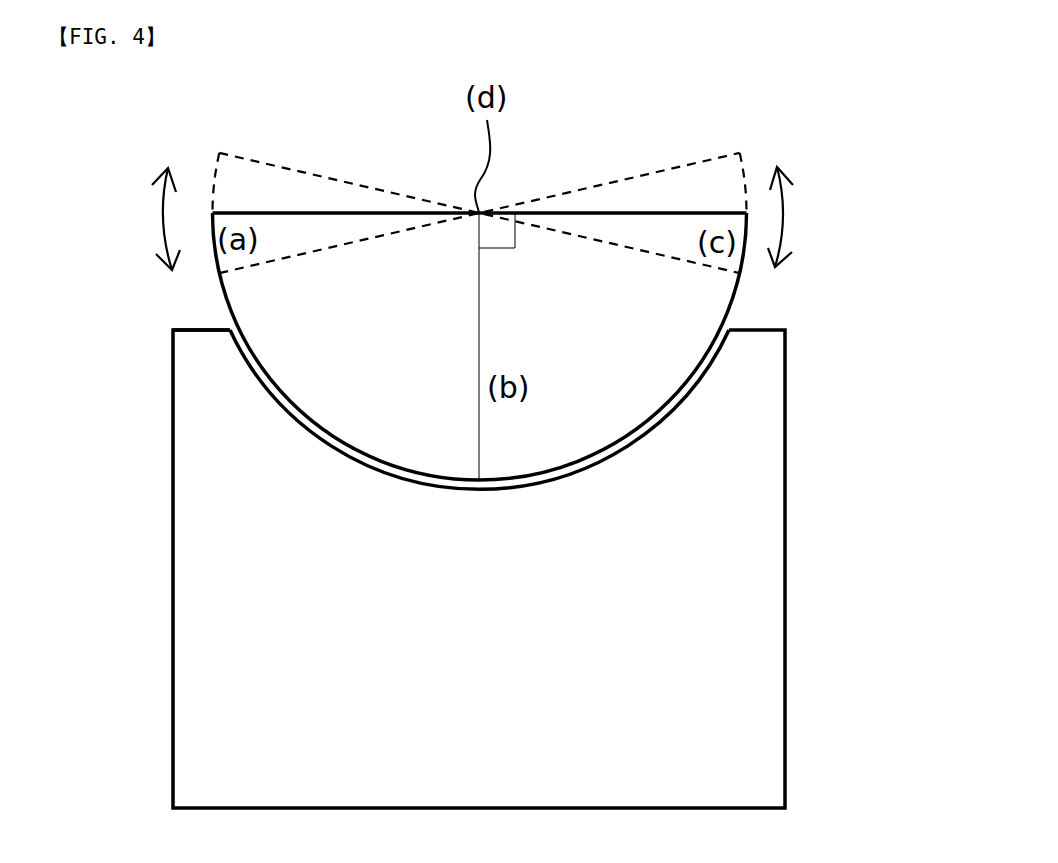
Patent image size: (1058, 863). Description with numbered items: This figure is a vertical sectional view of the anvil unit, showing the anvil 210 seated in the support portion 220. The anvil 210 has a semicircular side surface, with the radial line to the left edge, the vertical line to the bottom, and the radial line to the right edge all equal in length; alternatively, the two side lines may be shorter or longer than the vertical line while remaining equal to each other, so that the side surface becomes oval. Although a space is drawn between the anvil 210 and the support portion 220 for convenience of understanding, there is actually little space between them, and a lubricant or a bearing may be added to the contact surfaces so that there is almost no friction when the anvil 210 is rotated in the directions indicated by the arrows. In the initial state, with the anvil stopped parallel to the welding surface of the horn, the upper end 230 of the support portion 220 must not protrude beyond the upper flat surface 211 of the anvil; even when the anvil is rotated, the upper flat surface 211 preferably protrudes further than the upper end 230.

The anvil 210 is at (702, 313).
The upper flat surface 211 is at (618, 212).
The support portion 220 is at (762, 628).
The upper end 230 is at (202, 330).